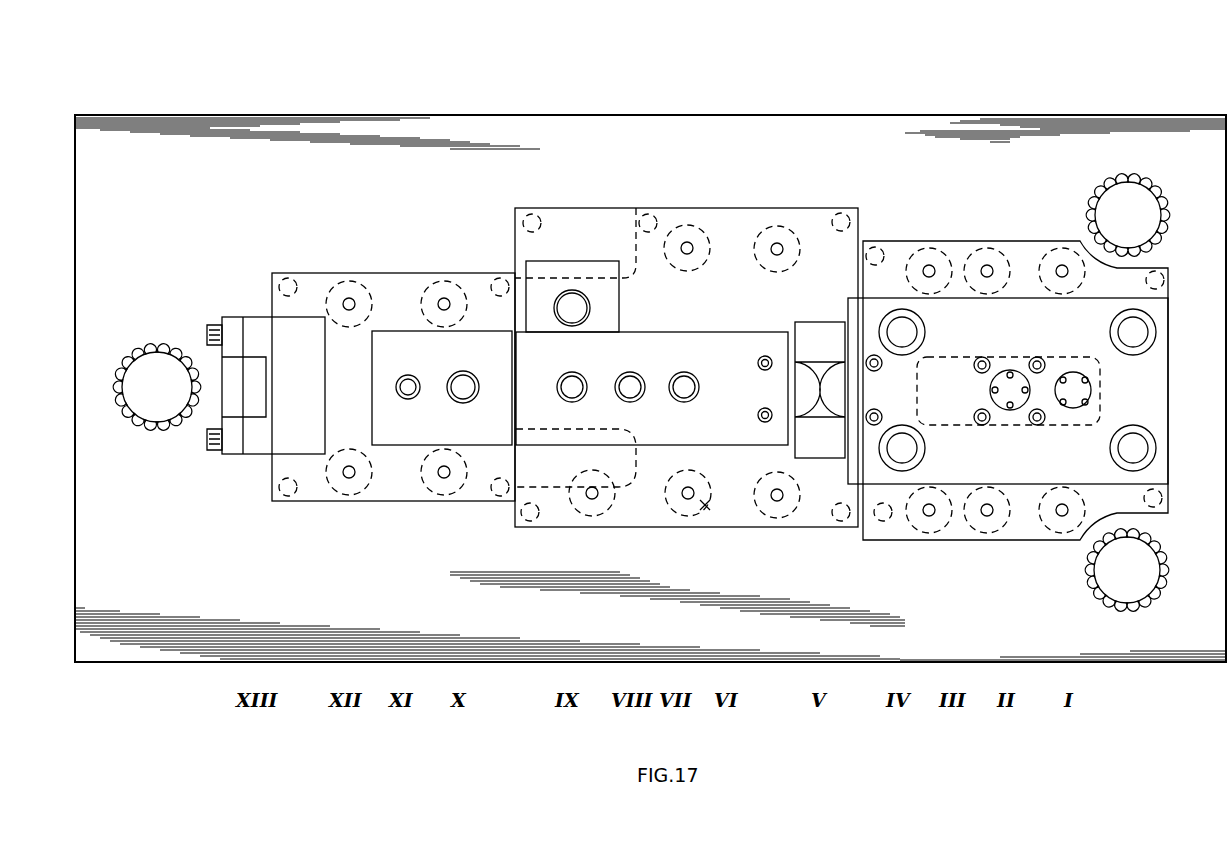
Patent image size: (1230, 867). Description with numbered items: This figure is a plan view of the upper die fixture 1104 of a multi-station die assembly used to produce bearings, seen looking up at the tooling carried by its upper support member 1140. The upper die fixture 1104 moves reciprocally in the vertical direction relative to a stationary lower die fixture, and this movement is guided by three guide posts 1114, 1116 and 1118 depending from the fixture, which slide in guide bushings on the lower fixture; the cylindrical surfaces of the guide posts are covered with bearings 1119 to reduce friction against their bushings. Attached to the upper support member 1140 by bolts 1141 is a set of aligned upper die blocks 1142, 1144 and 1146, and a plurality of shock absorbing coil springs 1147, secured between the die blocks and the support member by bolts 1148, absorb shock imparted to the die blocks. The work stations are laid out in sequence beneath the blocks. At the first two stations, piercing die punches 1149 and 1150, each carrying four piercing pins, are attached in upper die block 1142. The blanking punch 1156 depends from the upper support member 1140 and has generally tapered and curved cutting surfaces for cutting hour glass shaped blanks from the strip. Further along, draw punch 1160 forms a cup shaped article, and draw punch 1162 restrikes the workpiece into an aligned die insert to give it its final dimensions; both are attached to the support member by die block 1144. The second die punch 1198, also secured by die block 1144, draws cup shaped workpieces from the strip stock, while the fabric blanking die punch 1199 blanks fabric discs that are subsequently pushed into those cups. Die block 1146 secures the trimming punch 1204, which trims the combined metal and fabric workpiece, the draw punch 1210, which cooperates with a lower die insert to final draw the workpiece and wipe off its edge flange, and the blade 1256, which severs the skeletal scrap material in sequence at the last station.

The upper die fixture 1104 is at (1145, 85).
The upper support member 1140 is at (912, 128).
The bolts 1141 is at (288, 280).
The upper die block 1144 is at (720, 222).
The shock absorbing coil springs 1147 is at (349, 283).
The upper die block 1142 is at (1028, 262).
The bearings 1119 is at (121, 400).
The guide post 1114 is at (1140, 203).
The guide post 1118 is at (140, 375).
The guide post 1116 is at (1140, 546).
The upper die block 1146 is at (393, 290).
The blade 1256 is at (232, 372).
The draw punch 1210 is at (405, 386).
The trimming punch 1204 is at (461, 386).
The fabric blanking die punch 1199 is at (580, 312).
The second die punch 1198 is at (570, 386).
The draw punch 1162 is at (628, 386).
The draw punch 1160 is at (683, 386).
The blanking punch 1156 is at (815, 368).
The piercing die punch 1150 is at (1010, 378).
The piercing die punch 1149 is at (1073, 380).
The bolts 1148 is at (688, 493).